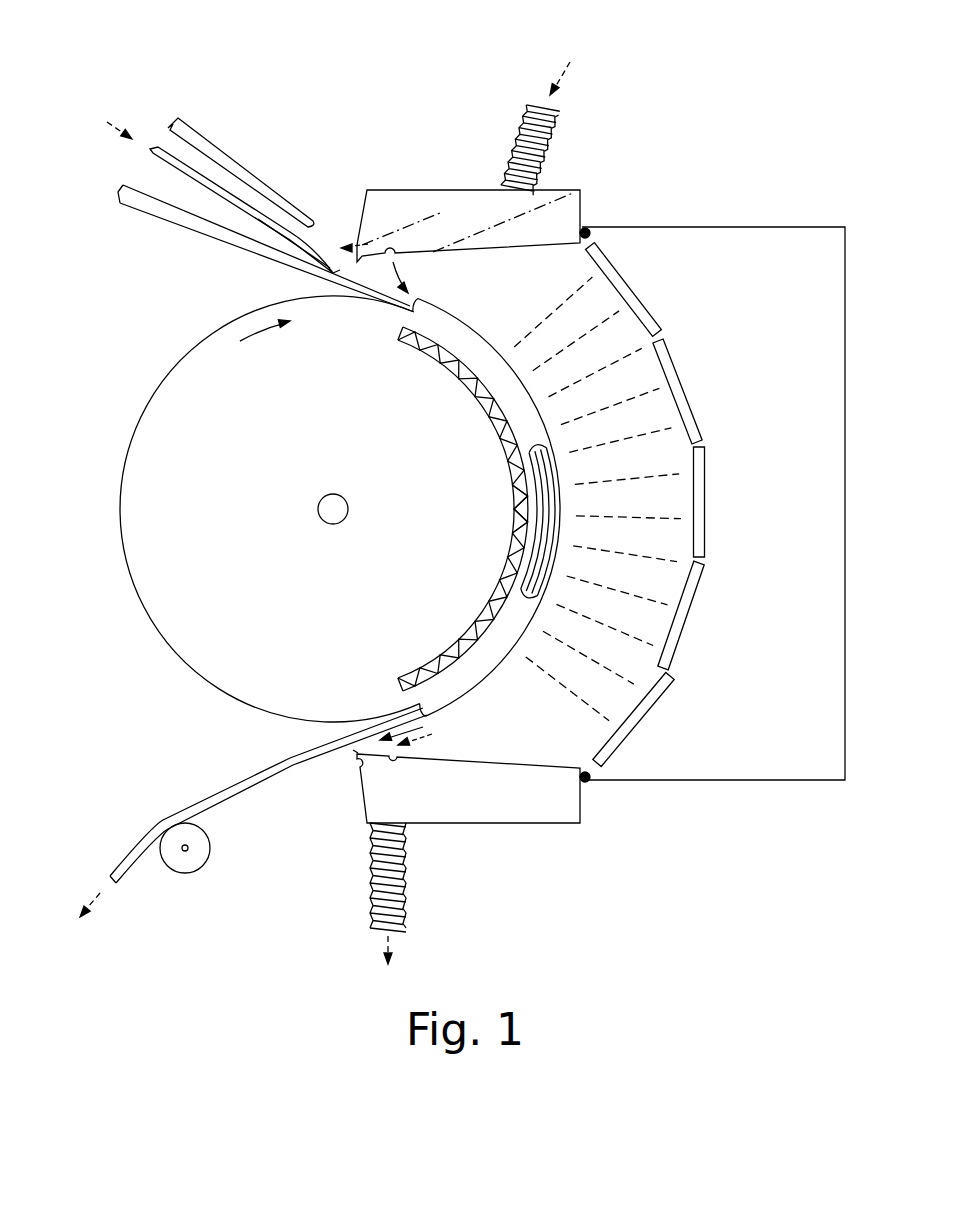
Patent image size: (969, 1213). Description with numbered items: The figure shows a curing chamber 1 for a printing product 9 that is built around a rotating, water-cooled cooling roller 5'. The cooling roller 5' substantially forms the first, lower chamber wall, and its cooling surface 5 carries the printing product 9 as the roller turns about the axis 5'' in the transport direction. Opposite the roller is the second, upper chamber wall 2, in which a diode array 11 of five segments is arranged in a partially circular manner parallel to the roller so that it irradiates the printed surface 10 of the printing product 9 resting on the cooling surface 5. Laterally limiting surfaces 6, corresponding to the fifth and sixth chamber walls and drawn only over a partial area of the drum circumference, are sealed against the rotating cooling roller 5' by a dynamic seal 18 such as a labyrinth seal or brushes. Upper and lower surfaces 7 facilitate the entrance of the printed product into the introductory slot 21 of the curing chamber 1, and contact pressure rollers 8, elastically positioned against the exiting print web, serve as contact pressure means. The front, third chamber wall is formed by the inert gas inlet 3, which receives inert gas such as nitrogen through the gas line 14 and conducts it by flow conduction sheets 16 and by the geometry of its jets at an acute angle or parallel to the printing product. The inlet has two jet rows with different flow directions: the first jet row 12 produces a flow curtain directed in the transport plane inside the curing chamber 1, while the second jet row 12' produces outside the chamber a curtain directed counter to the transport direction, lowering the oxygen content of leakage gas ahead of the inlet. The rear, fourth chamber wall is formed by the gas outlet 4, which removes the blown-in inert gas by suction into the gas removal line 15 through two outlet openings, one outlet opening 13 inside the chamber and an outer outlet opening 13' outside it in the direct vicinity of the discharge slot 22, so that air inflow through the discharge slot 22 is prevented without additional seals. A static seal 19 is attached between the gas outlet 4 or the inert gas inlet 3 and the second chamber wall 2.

The curing chamber 1 is at (697, 85).
The second chamber wall 2 is at (738, 780).
The inert gas inlet 3 is at (457, 190).
The gas outlet 4 is at (510, 797).
The cooling surface 5 is at (321, 509).
The cooling roller 5' is at (486, 521).
The axis 5'' is at (280, 503).
The laterally limiting surfaces 6 is at (483, 372).
The upper and lower surfaces 7 is at (192, 132).
The contact pressure rollers 8 is at (186, 856).
The printing product 9 is at (258, 219).
The printed surface 10 is at (220, 187).
The diode array 11 is at (706, 512).
The first jet row 12 is at (417, 205).
The second jet row 12' is at (368, 183).
The outlet opening 13 is at (419, 825).
The outer outlet opening 13' is at (362, 819).
The gas line 14 is at (553, 153).
The gas removal line 15 is at (370, 882).
The flow conduction sheet 16 is at (540, 204).
The dynamic seal 18 is at (526, 507).
The static seal 19 is at (590, 226).
The introductory slot 21 is at (333, 273).
The discharge slot 22 is at (353, 750).